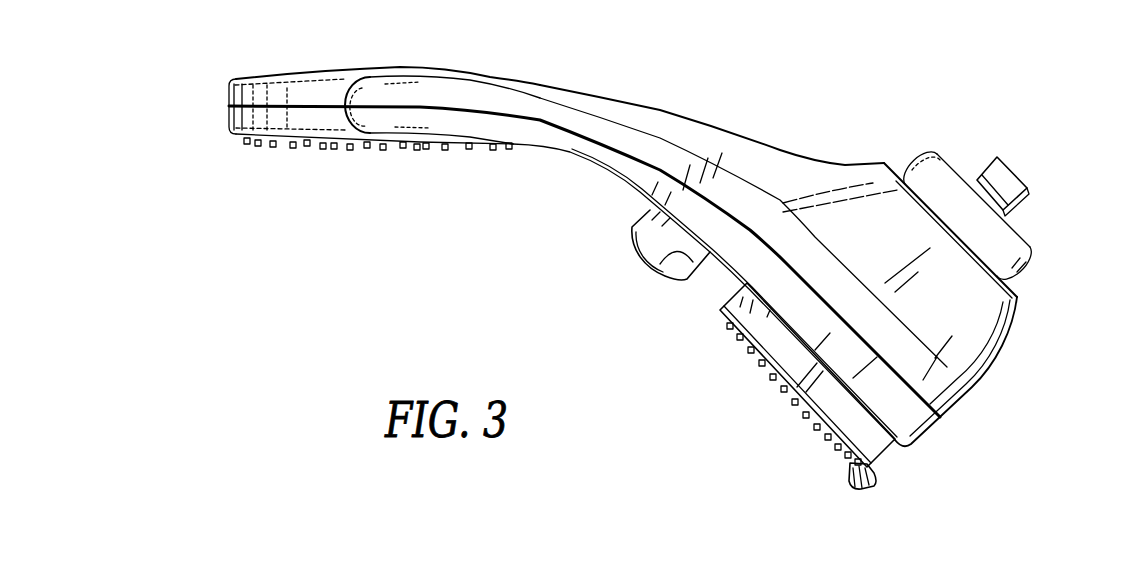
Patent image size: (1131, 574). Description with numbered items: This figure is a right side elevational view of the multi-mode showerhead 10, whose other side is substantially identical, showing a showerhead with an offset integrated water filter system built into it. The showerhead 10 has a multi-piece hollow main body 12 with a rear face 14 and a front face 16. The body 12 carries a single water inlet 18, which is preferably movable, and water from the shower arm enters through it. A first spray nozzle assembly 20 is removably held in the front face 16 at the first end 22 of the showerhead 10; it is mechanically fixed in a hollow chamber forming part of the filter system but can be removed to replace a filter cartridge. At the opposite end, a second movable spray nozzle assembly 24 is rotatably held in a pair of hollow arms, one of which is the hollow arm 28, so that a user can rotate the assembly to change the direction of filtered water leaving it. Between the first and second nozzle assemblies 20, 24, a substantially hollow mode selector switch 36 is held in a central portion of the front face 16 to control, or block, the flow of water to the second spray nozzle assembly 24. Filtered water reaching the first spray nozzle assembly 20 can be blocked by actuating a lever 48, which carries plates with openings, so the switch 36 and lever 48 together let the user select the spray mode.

The multi-mode showerhead 10 is at (690, 80).
The main body 12 is at (545, 152).
The rear face 14 is at (573, 90).
The front face 16 is at (583, 170).
The water inlet 18 is at (1002, 183).
The first spray nozzle assembly 20 is at (887, 455).
The first end 22 is at (963, 403).
The second movable spray nozzle assembly 24 is at (231, 92).
The hollow arm 28 is at (371, 116).
The mode selector switch 36 is at (680, 264).
The lever 48 is at (872, 488).